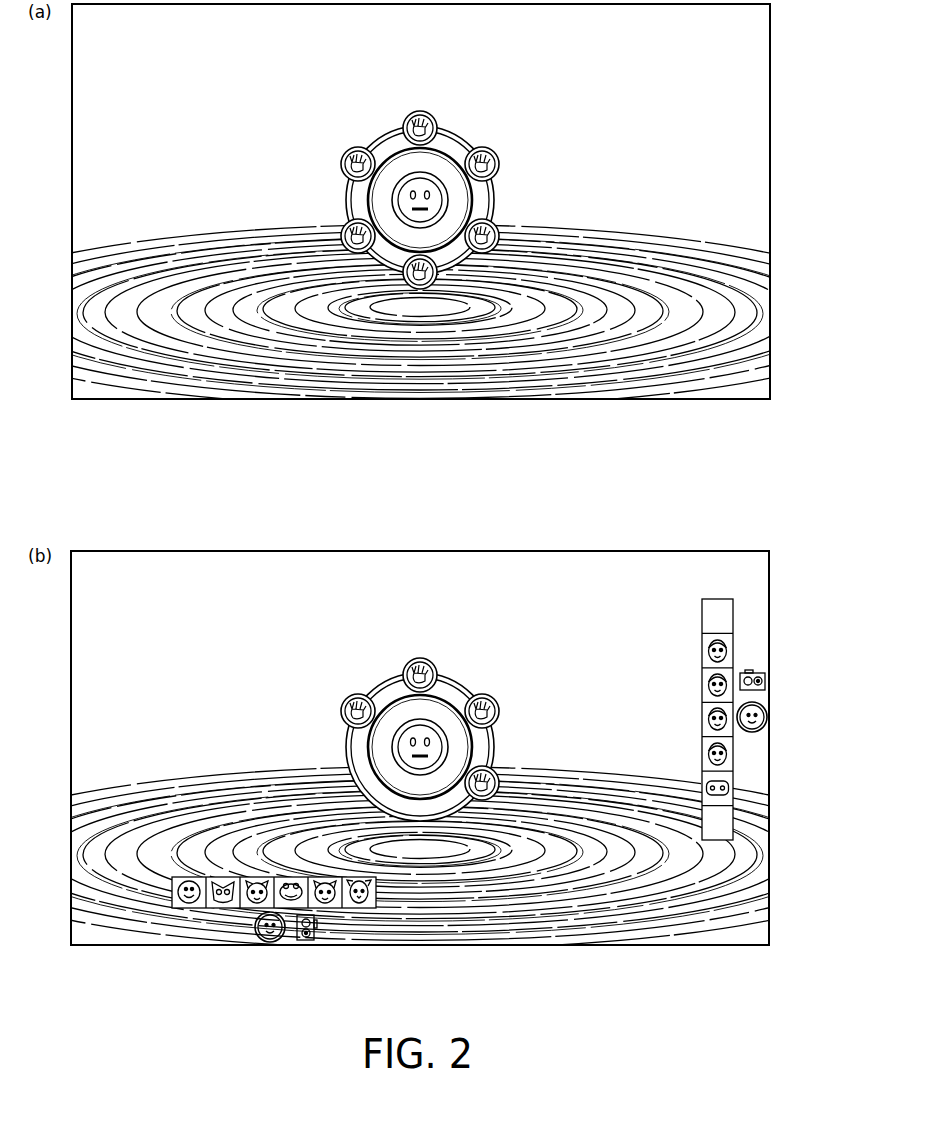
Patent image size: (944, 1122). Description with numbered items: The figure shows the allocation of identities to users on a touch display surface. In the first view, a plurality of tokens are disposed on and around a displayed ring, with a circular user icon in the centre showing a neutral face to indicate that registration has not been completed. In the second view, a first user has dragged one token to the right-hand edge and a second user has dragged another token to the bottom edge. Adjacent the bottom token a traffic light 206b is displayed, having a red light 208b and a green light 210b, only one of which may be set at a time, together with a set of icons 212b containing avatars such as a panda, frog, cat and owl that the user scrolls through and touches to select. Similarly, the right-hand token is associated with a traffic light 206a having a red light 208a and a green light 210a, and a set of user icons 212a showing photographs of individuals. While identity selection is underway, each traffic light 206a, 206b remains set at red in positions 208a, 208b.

The traffic light 206a is at (766, 682).
The traffic light icon 206b is at (309, 942).
The red light 208a is at (745, 672).
The red light 208b is at (318, 917).
The green light 210a is at (755, 672).
The green light 210b is at (318, 930).
The set of user icons 212a is at (703, 724).
The set of icons 212b is at (258, 877).